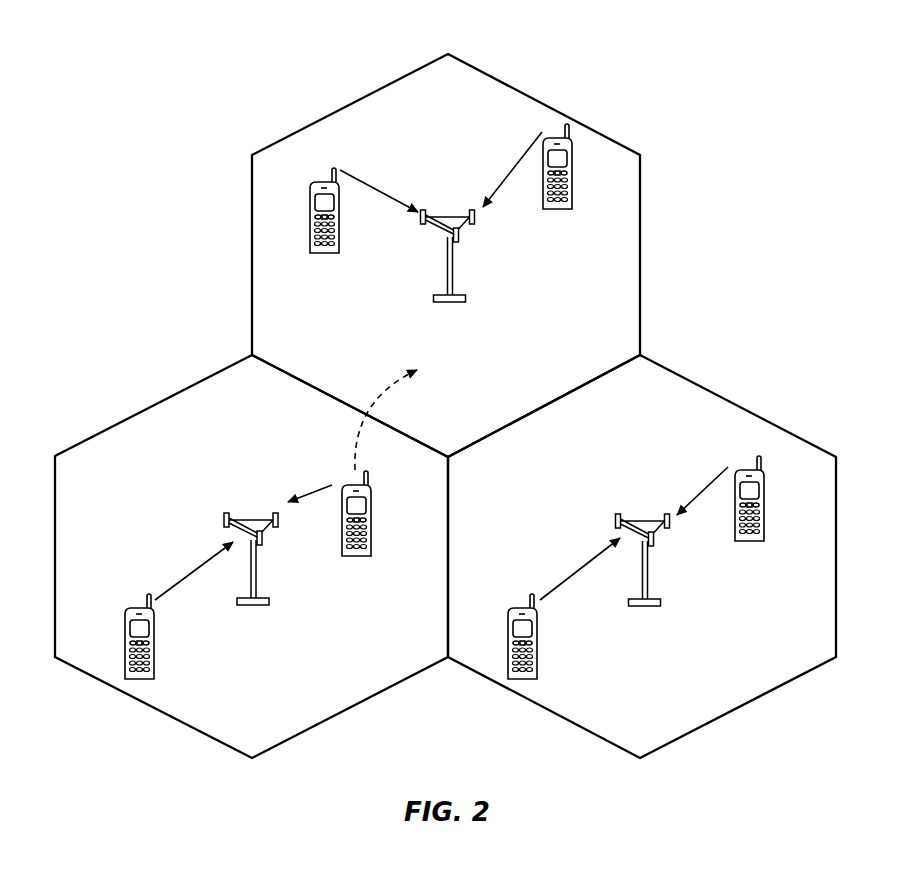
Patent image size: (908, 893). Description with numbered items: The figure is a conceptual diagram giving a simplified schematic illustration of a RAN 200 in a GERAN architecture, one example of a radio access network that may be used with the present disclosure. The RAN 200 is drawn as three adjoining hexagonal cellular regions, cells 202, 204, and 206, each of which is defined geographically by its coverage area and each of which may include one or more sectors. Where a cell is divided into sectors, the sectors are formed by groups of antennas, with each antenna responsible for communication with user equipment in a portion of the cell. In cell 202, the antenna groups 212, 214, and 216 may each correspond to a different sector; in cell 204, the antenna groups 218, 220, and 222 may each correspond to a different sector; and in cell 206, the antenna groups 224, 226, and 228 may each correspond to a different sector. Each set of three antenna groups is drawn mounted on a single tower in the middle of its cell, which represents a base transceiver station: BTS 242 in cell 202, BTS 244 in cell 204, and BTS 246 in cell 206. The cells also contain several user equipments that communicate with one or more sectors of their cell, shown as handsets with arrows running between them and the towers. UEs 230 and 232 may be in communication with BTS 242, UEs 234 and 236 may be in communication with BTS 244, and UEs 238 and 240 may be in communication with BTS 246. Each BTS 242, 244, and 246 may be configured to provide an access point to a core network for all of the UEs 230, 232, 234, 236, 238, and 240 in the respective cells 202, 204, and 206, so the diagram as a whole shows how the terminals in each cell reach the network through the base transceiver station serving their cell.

The RAN 200 is at (758, 79).
The cell 202 is at (738, 405).
The cell 204 is at (134, 415).
The cell 206 is at (528, 95).
The antenna group 212 is at (588, 508).
The antenna group 214 is at (679, 553).
The antenna group 216 is at (696, 533).
The antenna group 218 is at (288, 555).
The antenna group 220 is at (303, 533).
The antenna group 222 is at (197, 508).
The antenna group 224 is at (390, 232).
The antenna group 226 is at (485, 251).
The antenna group 228 is at (501, 231).
The UE 230 is at (764, 490).
The UE 232 is at (507, 630).
The UE 234 is at (372, 500).
The UE 236 is at (124, 628).
The UE 238 is at (322, 255).
The UE 240 is at (562, 211).
The BTS 242 is at (641, 539).
The BTS 244 is at (250, 538).
The BTS 246 is at (443, 236).